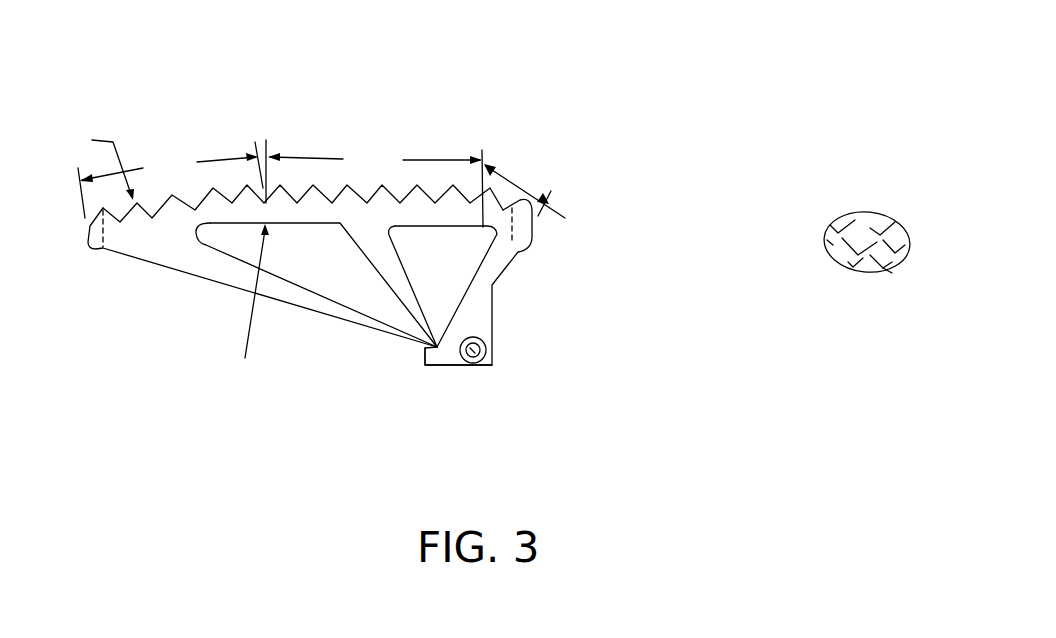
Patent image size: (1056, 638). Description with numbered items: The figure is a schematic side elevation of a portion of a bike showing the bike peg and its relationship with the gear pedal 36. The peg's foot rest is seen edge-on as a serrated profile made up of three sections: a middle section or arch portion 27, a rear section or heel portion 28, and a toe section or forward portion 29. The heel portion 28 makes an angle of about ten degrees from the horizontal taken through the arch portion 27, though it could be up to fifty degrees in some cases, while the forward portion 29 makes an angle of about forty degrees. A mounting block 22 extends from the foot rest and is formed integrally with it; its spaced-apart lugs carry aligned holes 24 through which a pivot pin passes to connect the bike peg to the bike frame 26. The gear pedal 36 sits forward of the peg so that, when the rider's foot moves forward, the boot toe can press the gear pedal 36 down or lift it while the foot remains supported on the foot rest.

The mounting block 22 is at (453, 358).
The aligned holes 24 is at (487, 360).
The bike frame 26 is at (473, 350).
The middle section (arch portion) 27 is at (477, 143).
The rear section (heel portion) 28 is at (251, 153).
The toe section (forward portion) 29 is at (507, 163).
The gear pedal 36 is at (867, 223).